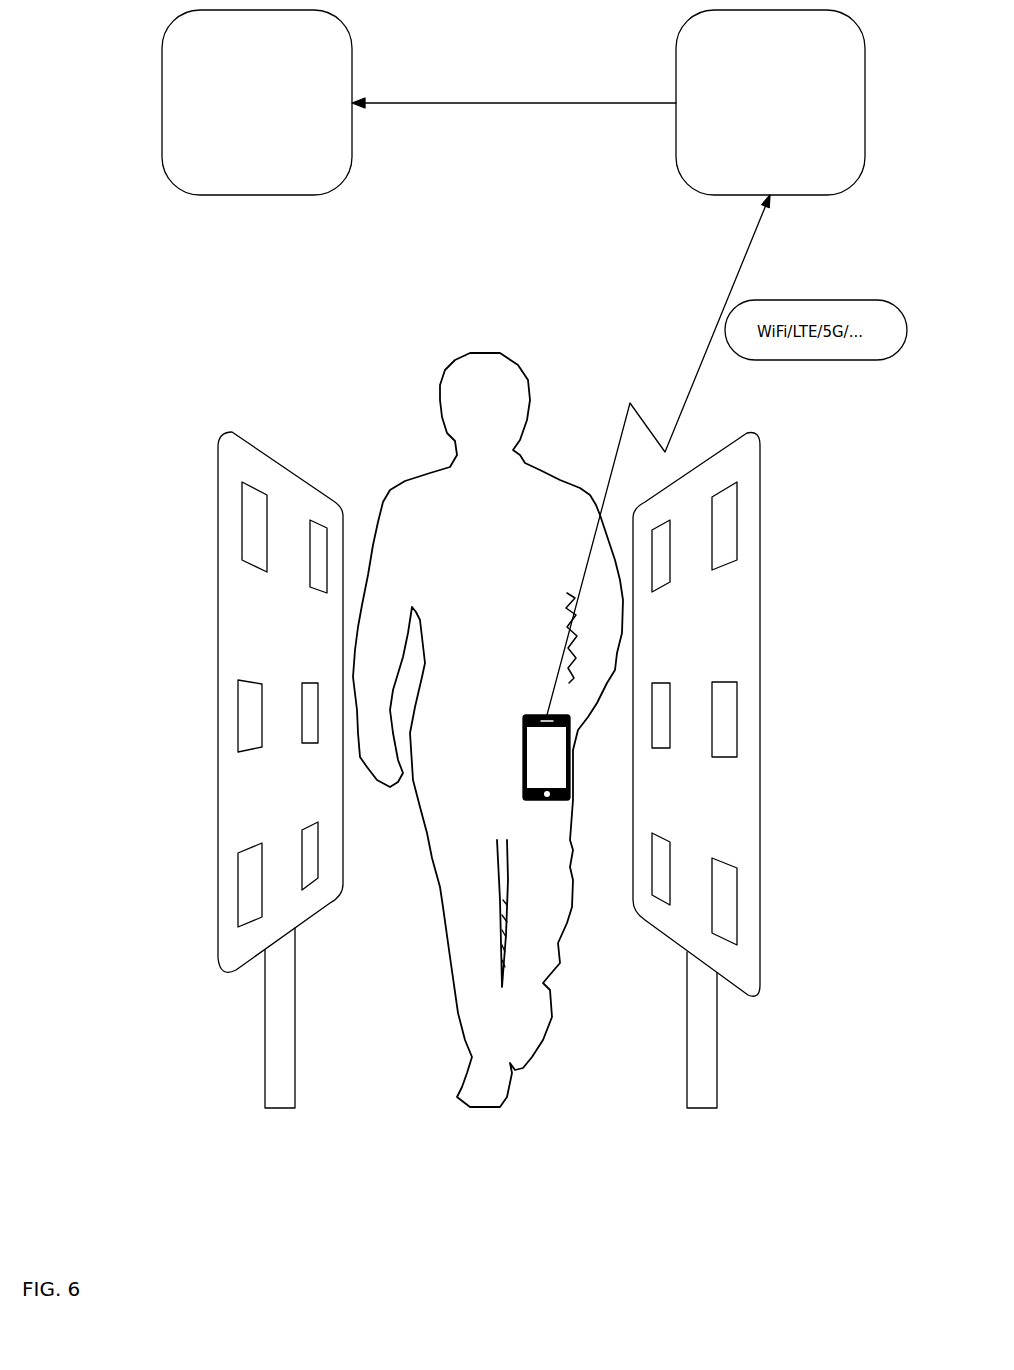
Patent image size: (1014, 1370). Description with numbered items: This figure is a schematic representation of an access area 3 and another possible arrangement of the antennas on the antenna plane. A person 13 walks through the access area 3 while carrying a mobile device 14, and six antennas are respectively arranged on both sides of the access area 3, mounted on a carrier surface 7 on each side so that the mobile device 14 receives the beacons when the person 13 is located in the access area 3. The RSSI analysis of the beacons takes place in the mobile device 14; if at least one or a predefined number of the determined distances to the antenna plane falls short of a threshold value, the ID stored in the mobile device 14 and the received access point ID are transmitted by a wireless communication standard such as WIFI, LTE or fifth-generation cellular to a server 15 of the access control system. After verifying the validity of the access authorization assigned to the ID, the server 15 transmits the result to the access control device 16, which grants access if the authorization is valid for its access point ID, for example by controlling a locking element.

The access area 3 is at (575, 1130).
The carrier surface 7 is at (228, 620).
The person 13 is at (427, 508).
The mobile device 14 is at (560, 775).
The server 15 is at (608, 102).
The access control device 16 is at (257, 102).